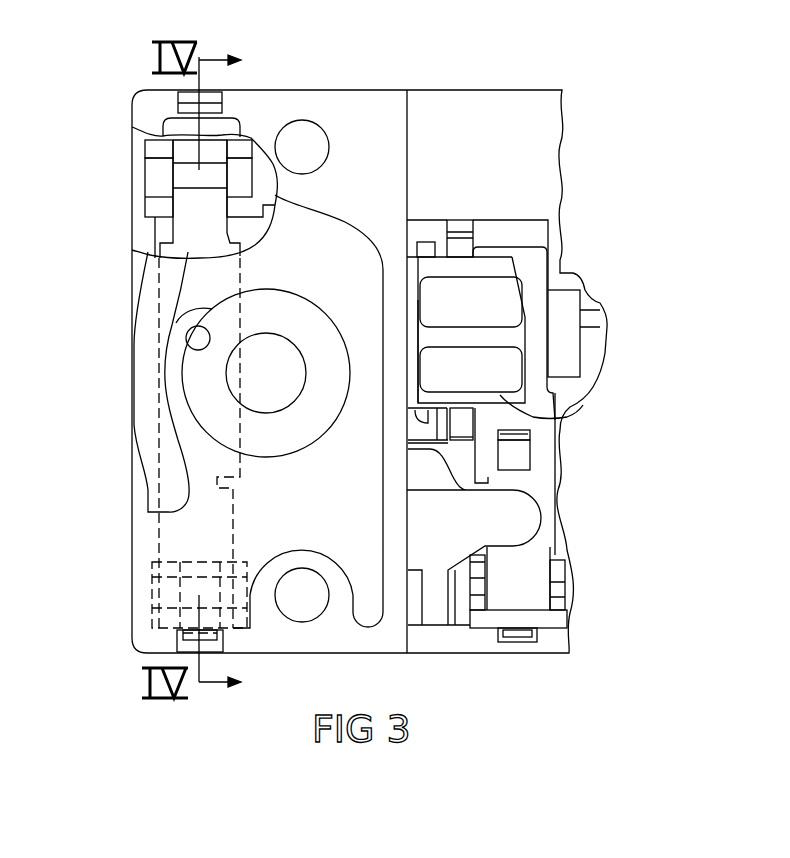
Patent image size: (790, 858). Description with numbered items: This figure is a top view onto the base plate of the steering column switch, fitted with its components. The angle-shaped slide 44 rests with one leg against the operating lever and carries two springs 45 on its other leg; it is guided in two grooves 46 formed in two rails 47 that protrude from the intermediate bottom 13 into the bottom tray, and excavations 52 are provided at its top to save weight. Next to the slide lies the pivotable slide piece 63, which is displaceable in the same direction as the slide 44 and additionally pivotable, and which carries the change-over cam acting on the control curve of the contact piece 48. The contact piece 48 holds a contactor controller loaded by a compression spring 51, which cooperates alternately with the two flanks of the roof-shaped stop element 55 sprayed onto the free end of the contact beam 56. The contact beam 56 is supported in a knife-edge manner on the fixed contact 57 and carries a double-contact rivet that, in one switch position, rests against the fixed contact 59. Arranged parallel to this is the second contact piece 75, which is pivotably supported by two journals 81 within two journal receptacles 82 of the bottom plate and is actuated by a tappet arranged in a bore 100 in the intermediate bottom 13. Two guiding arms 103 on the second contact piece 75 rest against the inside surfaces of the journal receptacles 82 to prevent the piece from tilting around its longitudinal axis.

The intermediate bottom 13 is at (180, 537).
The slide 44 is at (427, 378).
The springs 45 is at (428, 444).
The grooves 46 is at (442, 410).
The rails 47 is at (577, 411).
The contact piece 48 is at (543, 392).
The compression spring 51 is at (503, 433).
The excavations 52 is at (447, 366).
The stop element 55 is at (520, 460).
The contact beam 56 is at (538, 598).
The fixed contact 57 is at (476, 627).
The fixed contact 59 is at (472, 538).
The pivotable slide piece 63 is at (465, 243).
The second contact piece 75 is at (183, 240).
The journals 81 is at (247, 177).
The journal receptacles 82 is at (245, 150).
The bore 100 is at (199, 339).
The guiding arms 103 is at (212, 174).